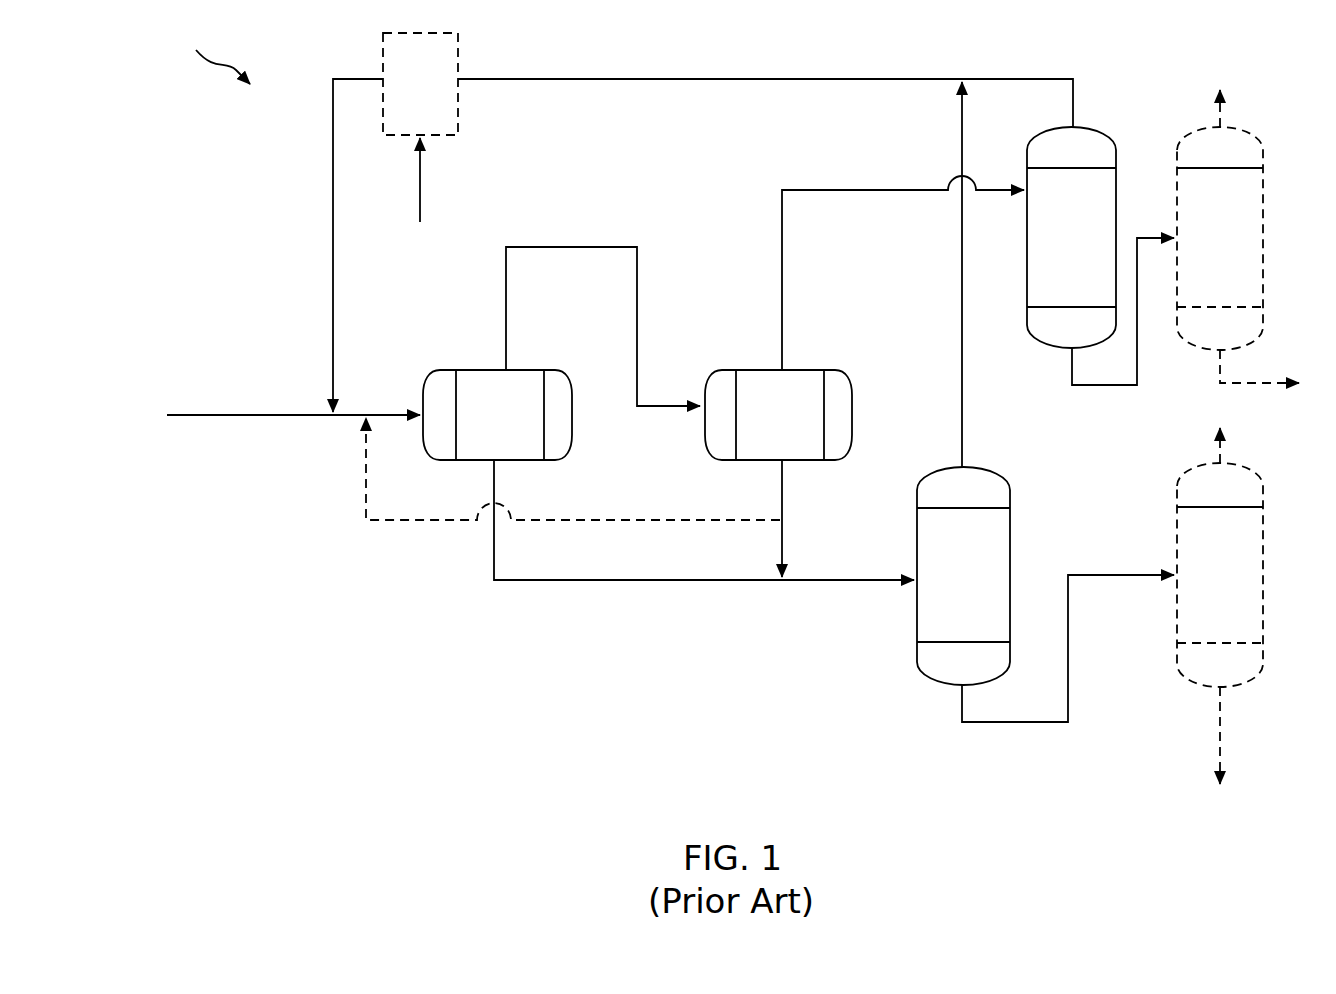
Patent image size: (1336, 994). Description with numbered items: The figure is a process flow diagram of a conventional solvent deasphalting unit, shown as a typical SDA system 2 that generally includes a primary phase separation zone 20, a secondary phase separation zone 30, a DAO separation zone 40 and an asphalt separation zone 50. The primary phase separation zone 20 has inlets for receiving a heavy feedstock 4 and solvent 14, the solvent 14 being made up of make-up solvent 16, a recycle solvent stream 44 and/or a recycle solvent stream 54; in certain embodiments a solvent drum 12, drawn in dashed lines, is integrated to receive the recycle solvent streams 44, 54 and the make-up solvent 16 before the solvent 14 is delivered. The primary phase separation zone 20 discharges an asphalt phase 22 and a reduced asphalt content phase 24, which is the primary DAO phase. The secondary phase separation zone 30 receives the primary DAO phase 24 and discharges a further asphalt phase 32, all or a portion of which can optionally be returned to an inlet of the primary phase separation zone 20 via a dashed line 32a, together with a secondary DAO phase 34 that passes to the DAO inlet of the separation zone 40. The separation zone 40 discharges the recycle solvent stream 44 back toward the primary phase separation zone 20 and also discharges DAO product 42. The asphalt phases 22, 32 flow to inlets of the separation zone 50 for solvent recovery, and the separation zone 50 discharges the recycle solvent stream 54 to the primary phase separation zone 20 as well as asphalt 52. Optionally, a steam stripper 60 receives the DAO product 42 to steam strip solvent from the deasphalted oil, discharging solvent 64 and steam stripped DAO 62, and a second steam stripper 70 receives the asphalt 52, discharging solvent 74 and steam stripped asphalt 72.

The SDA system 2 is at (212, 55).
The heavy feedstock 4 is at (262, 420).
The solvent drum 12 is at (432, 93).
The solvent 14 is at (332, 352).
The make-up solvent 16 is at (421, 196).
The primary phase separation zone 20 is at (512, 425).
The asphalt phase 22 is at (648, 582).
The reduced asphalt content phase 24 is at (583, 246).
The secondary phase separation zone 30 is at (791, 425).
The asphalt phase 32 is at (783, 504).
The line 32a is at (621, 519).
The secondary DAO phase 34 is at (890, 192).
The DAO separation zone 40 is at (1071, 237).
The DAO product 42 is at (1102, 388).
The recycle solvent stream 44 is at (1001, 78).
The asphalt separation zone 50 is at (974, 587).
The asphalt 52 is at (990, 723).
The recycle solvent stream 54 is at (963, 388).
The steam stripper 60 is at (1231, 258).
The steam stripped DAO 62 is at (1276, 382).
The solvent 64 is at (1228, 107).
The steam stripper 70 is at (1231, 597).
The steam stripped asphalt 72 is at (1226, 737).
The solvent 74 is at (1226, 447).